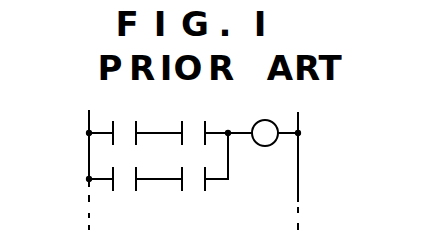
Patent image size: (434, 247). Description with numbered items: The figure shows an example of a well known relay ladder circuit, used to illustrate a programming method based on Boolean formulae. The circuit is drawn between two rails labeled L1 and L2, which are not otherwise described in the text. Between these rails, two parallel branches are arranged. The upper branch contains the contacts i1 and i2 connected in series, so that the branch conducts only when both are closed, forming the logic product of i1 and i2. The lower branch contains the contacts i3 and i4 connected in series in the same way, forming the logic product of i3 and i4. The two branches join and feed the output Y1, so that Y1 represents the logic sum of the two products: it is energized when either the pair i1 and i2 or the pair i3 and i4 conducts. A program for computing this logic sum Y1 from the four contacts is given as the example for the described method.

The power line L1 is at (87, 153).
The power line L2 is at (299, 152).
The contact i1 is at (135, 119).
The contact i2 is at (217, 119).
The contact i3 is at (135, 193).
The contact i4 is at (205, 176).
The logic sum Y1 is at (275, 120).